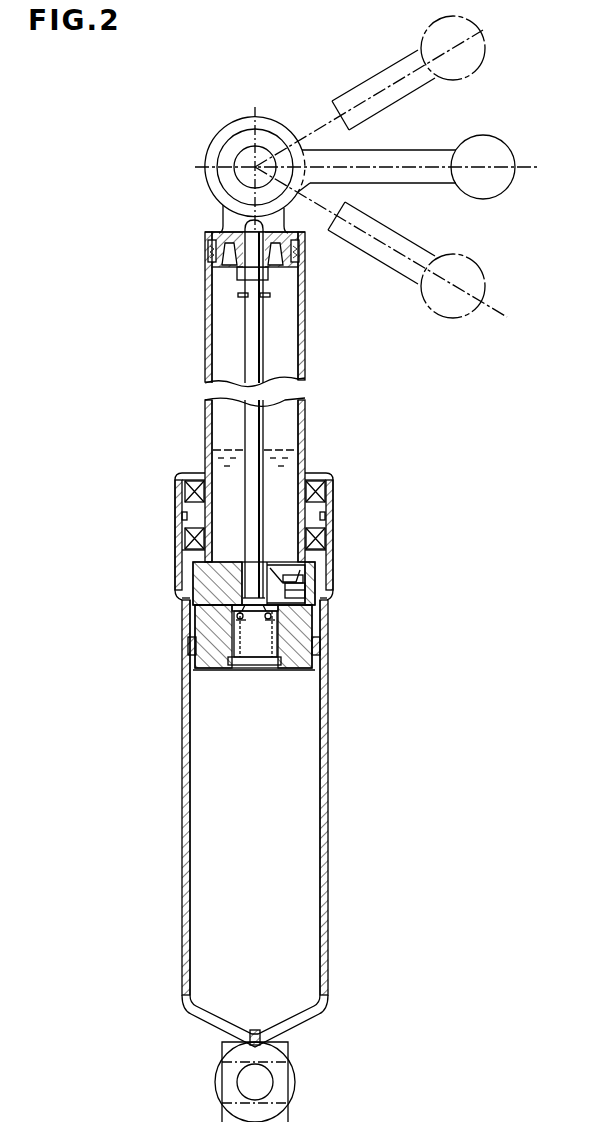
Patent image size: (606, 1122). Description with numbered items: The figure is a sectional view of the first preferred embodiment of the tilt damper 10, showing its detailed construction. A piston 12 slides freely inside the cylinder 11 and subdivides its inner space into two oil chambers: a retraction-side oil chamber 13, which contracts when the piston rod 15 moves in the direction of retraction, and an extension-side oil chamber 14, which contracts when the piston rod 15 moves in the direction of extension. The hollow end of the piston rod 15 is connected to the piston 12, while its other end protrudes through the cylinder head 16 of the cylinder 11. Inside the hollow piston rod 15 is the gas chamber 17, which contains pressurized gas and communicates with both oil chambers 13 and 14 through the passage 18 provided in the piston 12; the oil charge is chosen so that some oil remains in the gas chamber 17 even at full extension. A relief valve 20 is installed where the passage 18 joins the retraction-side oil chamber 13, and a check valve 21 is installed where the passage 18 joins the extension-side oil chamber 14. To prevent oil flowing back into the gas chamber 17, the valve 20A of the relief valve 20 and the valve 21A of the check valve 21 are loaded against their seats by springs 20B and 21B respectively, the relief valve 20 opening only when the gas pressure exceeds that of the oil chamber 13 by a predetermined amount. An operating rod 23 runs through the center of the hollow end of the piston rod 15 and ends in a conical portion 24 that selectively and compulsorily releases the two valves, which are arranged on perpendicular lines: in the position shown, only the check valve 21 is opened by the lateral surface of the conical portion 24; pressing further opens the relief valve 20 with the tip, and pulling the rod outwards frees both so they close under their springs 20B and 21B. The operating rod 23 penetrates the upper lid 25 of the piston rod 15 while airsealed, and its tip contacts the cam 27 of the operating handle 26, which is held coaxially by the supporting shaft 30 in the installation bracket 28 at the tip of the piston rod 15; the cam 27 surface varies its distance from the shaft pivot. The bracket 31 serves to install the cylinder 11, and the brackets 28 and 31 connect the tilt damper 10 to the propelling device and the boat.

The tilt damper 10 is at (312, 422).
The cylinder 11 is at (328, 732).
The piston 12 is at (305, 625).
The retraction-side oil chamber 13 is at (313, 908).
The extension-side oil chamber 14 is at (327, 598).
The piston rod 15 is at (302, 353).
The cylinder head 16 is at (330, 507).
The gas chamber 17 is at (288, 302).
The passage 18 is at (240, 590).
The relief valve 20 is at (251, 628).
The valve 20A is at (195, 638).
The spring 20B is at (237, 647).
The check valve 21 is at (283, 566).
The valve 21A is at (290, 583).
The spring 21B is at (307, 600).
The operating rod 23 is at (263, 323).
The conical portion 24 is at (253, 617).
The upper lid 25 is at (220, 233).
The operating handle 26 is at (417, 157).
The cam 27 is at (222, 183).
The installation bracket 28 is at (238, 119).
The supporting shaft 30 is at (240, 153).
The bracket 31 is at (297, 1073).